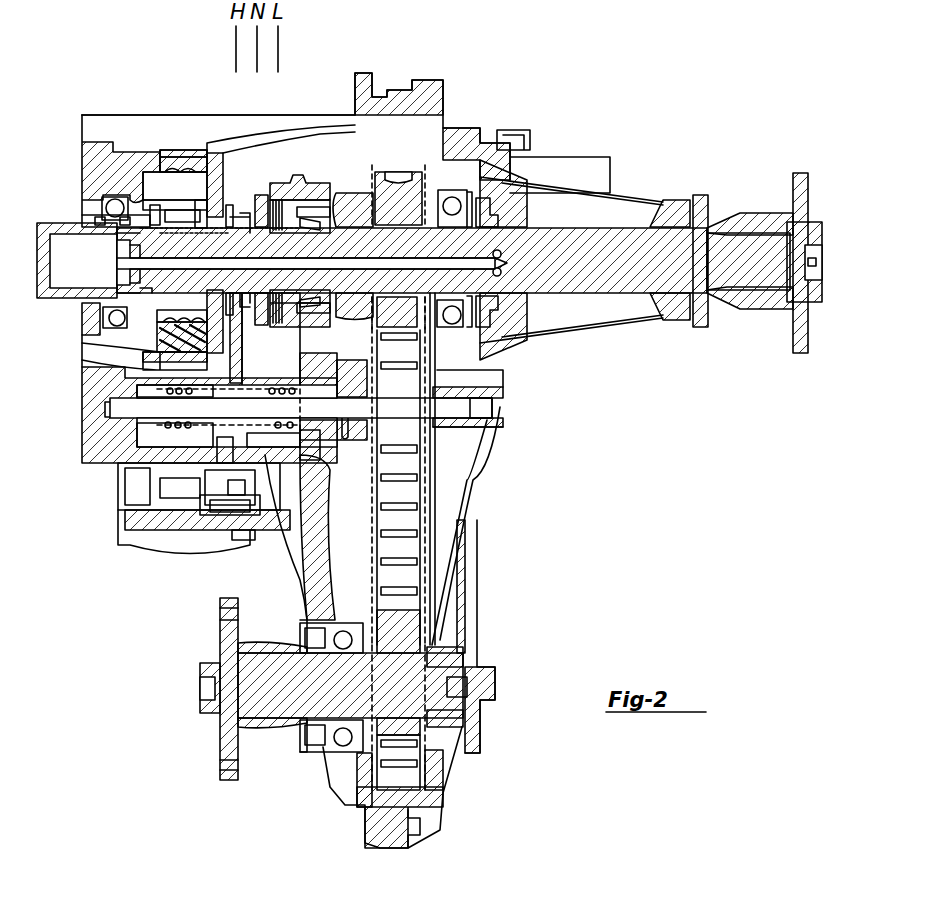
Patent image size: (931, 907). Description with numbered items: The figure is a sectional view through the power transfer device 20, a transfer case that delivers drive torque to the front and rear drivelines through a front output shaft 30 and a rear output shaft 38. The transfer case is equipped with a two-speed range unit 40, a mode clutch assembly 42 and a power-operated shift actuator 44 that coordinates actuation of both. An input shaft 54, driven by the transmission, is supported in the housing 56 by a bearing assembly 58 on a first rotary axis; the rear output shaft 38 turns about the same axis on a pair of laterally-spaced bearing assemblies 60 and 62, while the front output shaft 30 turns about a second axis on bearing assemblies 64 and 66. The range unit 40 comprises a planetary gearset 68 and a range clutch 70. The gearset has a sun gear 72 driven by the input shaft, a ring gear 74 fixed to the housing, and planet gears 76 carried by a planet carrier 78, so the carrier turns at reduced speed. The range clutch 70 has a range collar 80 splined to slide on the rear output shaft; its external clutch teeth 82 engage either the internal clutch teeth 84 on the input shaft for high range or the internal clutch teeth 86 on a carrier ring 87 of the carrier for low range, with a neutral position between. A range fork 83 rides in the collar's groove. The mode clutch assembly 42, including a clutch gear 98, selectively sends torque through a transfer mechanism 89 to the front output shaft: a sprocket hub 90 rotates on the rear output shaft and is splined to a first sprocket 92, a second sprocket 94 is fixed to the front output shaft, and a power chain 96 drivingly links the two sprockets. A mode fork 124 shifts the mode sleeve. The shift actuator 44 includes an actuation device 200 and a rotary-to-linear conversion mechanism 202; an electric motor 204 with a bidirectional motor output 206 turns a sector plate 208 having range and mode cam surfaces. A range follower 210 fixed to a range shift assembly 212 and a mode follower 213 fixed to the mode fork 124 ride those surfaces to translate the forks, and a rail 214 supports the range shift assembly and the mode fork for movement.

The power transfer device 20 is at (472, 84).
The front output shaft 30 is at (207, 680).
The rear output shaft 38 is at (745, 242).
The two-speed range unit 40 is at (165, 140).
The mode clutch assembly 42 is at (308, 172).
The power-operated shift actuator 44 is at (120, 538).
The input shaft 54 is at (66, 232).
The housing 56 is at (232, 138).
The bearing assembly 58 is at (108, 208).
The bearing assembly 60 is at (148, 292).
The bearing assembly 62 is at (490, 215).
The bearing assembly 64 is at (342, 740).
The bearing assembly 66 is at (452, 722).
The planetary gearset 68 is at (155, 151).
The range clutch 70 is at (248, 211).
The sun gear 72 is at (208, 312).
The ring gear 74 is at (160, 372).
The planet gears 76 is at (160, 347).
The planet carrier 78 is at (218, 172).
The range collar 80 is at (236, 224).
The external clutch teeth 82 is at (190, 232).
The range fork 83 is at (160, 387).
The internal clutch teeth 84 is at (190, 227).
The internal clutch teeth 86 is at (210, 222).
The carrier ring 87 is at (225, 340).
The transfer mechanism 89 is at (432, 488).
The sprocket hub 90 is at (362, 218).
The first sprocket 92 is at (398, 190).
The second sprocket 94 is at (405, 763).
The power chain 96 is at (410, 515).
The clutch gear 98 is at (336, 210).
The mode fork 124 is at (300, 357).
The power-operated actuation device 200 is at (220, 522).
The rotary-to-linear conversion mechanism 202 is at (365, 382).
The electric motor 204 is at (132, 522).
The motor output 206 is at (240, 515).
The sector plate 208 is at (137, 442).
The range follower 210 is at (275, 442).
The range shift assembly 212 is at (163, 400).
The mode follower 213 is at (320, 440).
The rail 214 is at (470, 408).